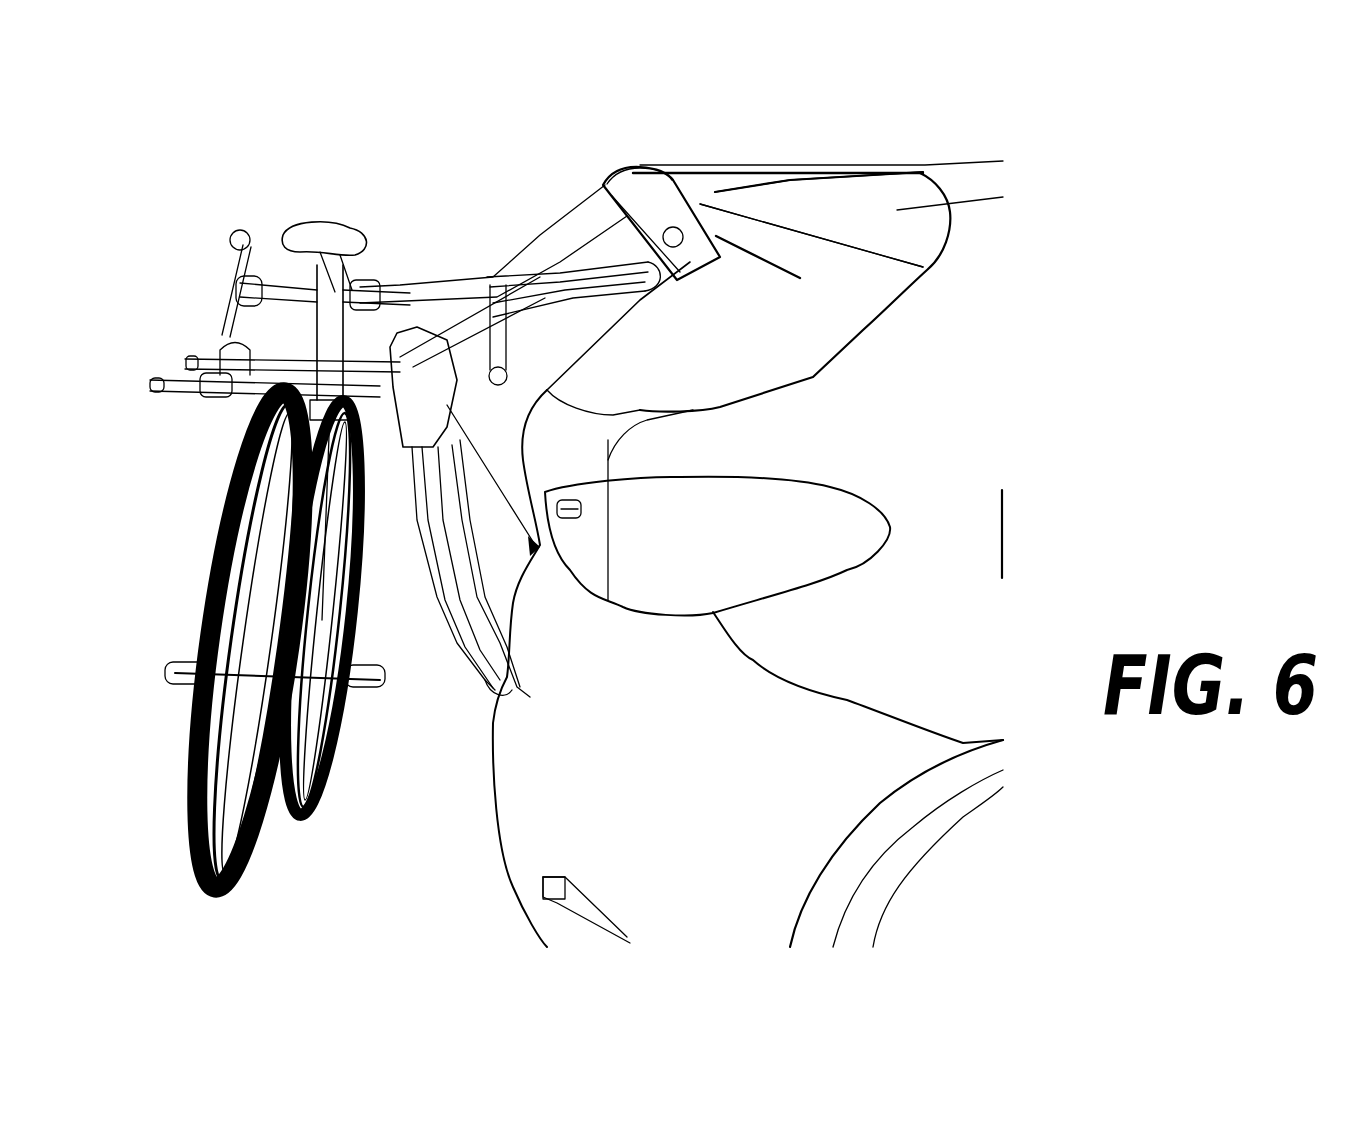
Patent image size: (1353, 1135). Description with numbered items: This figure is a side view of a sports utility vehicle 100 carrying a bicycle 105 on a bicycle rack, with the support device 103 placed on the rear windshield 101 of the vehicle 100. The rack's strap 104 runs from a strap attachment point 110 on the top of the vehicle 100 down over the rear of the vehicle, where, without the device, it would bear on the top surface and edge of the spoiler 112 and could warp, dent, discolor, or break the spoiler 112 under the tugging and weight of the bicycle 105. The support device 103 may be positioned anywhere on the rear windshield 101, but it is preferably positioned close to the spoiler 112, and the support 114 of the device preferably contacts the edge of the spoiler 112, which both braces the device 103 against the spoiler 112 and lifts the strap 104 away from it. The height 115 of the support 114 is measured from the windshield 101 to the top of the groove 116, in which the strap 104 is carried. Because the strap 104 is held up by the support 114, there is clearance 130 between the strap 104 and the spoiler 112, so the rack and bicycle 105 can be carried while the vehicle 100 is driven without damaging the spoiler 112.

The vehicle 100 is at (893, 517).
The rear windshield 101 is at (748, 554).
The support device 103 is at (554, 367).
The strap 104 is at (623, 163).
The bicycle 105 is at (272, 294).
The strap attachment point 110 is at (925, 170).
The spoiler 112 is at (703, 186).
The support 114 is at (599, 185).
The height 115 is at (638, 208).
The groove 116 is at (636, 170).
The clearance 130 is at (782, 208).